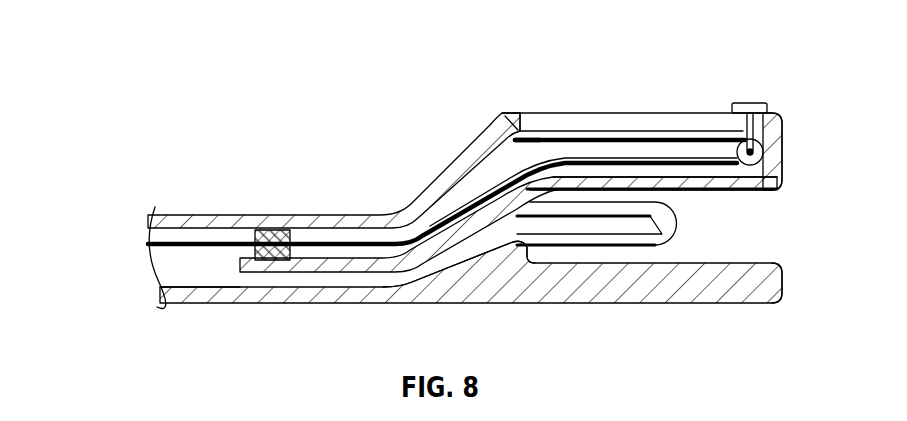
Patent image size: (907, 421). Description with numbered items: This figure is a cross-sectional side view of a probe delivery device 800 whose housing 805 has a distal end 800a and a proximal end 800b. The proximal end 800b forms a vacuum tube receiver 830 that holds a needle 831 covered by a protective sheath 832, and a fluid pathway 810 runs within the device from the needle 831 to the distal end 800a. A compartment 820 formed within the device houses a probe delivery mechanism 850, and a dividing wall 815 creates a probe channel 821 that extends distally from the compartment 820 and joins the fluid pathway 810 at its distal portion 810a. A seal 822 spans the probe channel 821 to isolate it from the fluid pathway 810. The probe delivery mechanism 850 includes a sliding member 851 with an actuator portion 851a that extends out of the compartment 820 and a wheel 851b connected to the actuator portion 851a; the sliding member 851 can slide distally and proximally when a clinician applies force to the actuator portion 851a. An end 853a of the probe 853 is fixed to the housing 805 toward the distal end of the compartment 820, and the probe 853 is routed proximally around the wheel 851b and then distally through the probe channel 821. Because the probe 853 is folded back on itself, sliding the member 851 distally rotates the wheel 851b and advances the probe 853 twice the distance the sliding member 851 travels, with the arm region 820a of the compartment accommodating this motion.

The probe delivery device 800 is at (800, 43).
The distal end 800a is at (160, 318).
The proximal end 800b is at (744, 328).
The housing 805 is at (595, 290).
The fluid pathway 810 is at (467, 243).
The distal portion of fluid pathway 810a is at (212, 265).
The dividing wall 815 is at (323, 267).
The compartment 820 is at (440, 192).
The display arm portion 820a is at (590, 132).
The probe channel 821 is at (340, 232).
The seal 822 is at (267, 230).
The vacuum tube receiver 830 is at (670, 252).
The needle 831 is at (667, 230).
The protective sheath 832 is at (680, 217).
The probe delivery mechanism 850 is at (746, 100).
The sliding member 851 is at (716, 106).
The actuator portion 851a is at (760, 100).
The wheel 851b is at (768, 171).
The probe 853 is at (188, 242).
The end of probe 853a is at (510, 130).